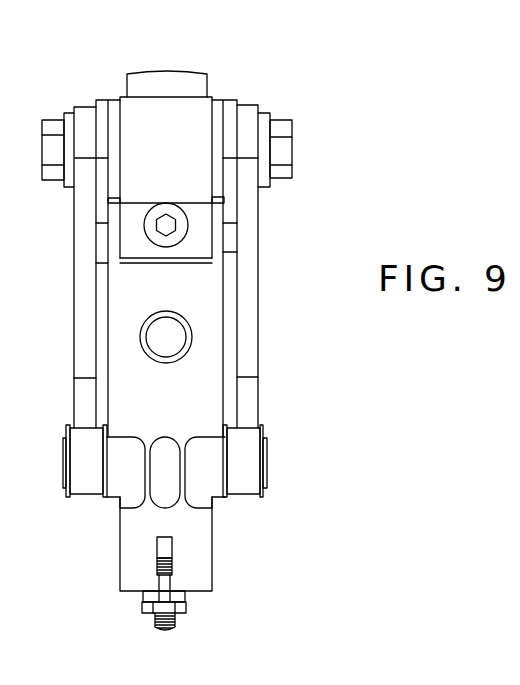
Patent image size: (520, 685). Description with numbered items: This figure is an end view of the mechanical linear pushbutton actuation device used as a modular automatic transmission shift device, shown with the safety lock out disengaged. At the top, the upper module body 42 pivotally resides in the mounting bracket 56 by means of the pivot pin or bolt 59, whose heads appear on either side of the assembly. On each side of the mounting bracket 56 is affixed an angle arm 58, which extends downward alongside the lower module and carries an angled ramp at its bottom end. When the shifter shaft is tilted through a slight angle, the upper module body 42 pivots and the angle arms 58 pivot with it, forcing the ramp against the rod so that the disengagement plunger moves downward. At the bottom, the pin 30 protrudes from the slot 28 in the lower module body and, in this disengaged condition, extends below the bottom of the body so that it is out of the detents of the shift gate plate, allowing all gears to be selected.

The upper module body 42 is at (188, 122).
The mounting bracket 56 is at (232, 112).
The angle arm 58 is at (250, 195).
The pivot pin or bolt 59 is at (282, 143).
The slot 28 is at (162, 548).
The pin 30 is at (172, 568).